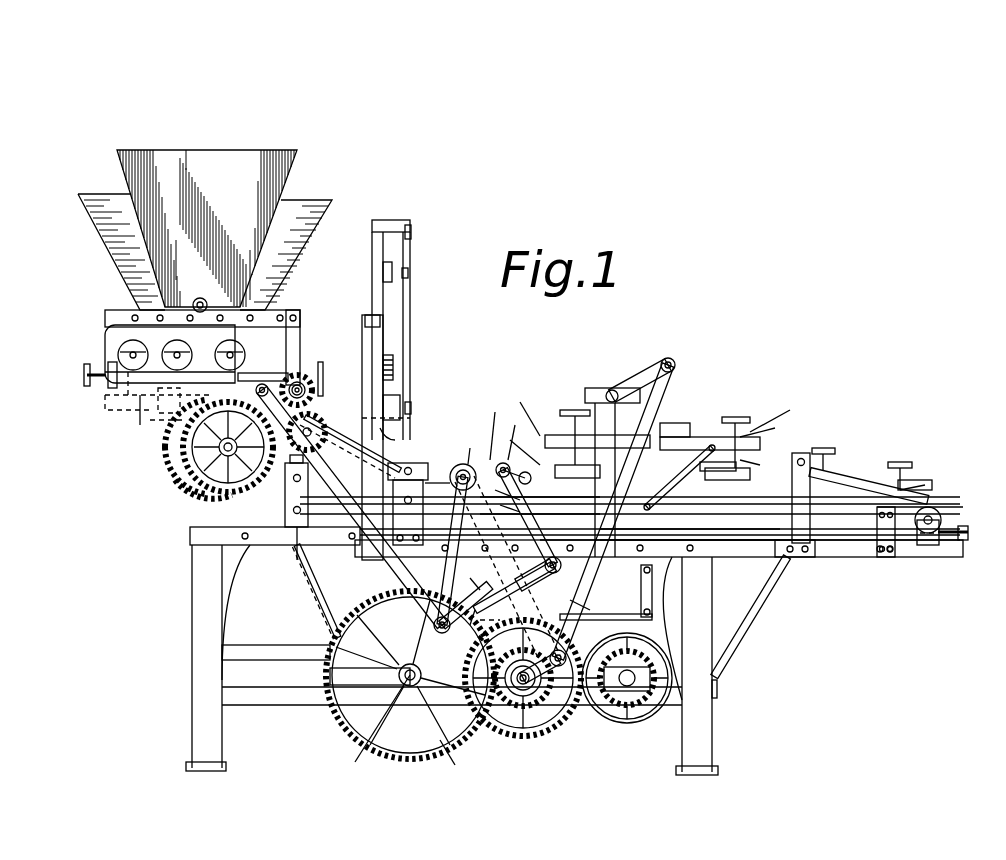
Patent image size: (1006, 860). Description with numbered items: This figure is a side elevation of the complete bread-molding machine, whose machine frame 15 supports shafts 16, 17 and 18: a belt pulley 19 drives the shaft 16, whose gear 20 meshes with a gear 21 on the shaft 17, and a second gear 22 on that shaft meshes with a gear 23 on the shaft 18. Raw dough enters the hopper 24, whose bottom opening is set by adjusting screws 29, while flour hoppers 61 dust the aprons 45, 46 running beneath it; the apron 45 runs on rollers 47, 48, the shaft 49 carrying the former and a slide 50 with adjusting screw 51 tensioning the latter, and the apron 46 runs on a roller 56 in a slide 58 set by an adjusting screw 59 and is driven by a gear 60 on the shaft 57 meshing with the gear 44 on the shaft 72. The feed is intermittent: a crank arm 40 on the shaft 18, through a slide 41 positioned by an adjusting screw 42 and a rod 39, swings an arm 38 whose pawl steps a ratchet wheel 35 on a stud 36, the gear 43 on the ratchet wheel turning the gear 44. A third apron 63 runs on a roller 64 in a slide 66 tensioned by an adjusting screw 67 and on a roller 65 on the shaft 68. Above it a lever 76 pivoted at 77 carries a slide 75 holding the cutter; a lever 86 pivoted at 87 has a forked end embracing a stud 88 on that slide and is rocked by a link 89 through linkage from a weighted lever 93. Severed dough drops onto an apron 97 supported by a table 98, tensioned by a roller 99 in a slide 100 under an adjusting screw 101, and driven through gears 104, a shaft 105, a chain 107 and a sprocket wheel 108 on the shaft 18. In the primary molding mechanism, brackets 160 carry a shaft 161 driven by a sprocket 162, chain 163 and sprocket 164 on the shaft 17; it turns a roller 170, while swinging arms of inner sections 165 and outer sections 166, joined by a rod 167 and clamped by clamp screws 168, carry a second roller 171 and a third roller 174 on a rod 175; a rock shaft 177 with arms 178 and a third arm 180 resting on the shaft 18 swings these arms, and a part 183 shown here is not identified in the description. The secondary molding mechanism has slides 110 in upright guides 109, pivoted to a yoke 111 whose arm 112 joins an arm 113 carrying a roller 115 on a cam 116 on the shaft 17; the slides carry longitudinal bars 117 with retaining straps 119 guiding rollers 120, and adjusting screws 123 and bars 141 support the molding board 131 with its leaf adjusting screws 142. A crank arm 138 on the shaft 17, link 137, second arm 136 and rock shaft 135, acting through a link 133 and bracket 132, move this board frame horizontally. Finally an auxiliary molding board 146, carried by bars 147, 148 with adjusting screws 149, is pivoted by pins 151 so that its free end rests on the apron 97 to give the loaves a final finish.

The hopper 24 is at (207, 216).
The flour hoppers 61 is at (105, 198).
The adjusting screws 29 is at (204, 300).
The apron 45 is at (140, 325).
The apron 46 is at (295, 345).
The roller 48 is at (110, 338).
The shaft 49 is at (172, 358).
The roller 47 is at (187, 359).
The roller 56 is at (245, 348).
The slide 58 is at (263, 367).
The adjusting screw 51 is at (84, 377).
The slide 50 is at (130, 372).
The roller 64 is at (138, 418).
The adjusting screw 67 is at (135, 412).
The arm 38 is at (165, 425).
The slide 66 is at (150, 430).
The gear 60 is at (310, 376).
The adjusting screw 59 is at (323, 380).
The shaft 57 is at (306, 393).
The gear 44 is at (310, 430).
The stud 36 is at (182, 447).
The ratchet wheel 35 is at (175, 468).
The gear 43 is at (195, 488).
The rod 39 is at (370, 560).
The shaft 72 is at (320, 424).
The gears 104 is at (286, 498).
The shaft 105 is at (295, 540).
The pivot 87 is at (412, 230).
The lever 86 is at (404, 318).
The link 89 is at (396, 276).
The slide 75 is at (396, 390).
The stud 88 is at (410, 408).
The pivot 77 is at (404, 418).
The lever 76 is at (396, 437).
The apron 63 is at (400, 442).
The roller 65 is at (420, 465).
The shaft 68 is at (423, 489).
The roller 170 is at (443, 468).
The table 98 is at (848, 512).
The rod or shaft 175 is at (520, 500).
The roller 174 is at (520, 515).
The upright guides 109 is at (660, 524).
The slides 110 is at (650, 541).
The machine frame 15 is at (722, 548).
The belt pulley 19 is at (755, 580).
The chain 107 is at (322, 605).
The lever 93 is at (272, 660).
The shaft 18 is at (412, 690).
The sprocket wheel 108 is at (377, 731).
The gear 23 is at (451, 767).
The gear 21 is at (535, 735).
The gear 22 is at (500, 710).
The sprocket 164 is at (520, 690).
The shaft 17 is at (528, 682).
The crank arm 138 is at (560, 668).
The gear 20 is at (633, 660).
The shaft 16 is at (630, 686).
The shaft 161 is at (464, 463).
The brackets 160 is at (446, 560).
The sprocket 162 is at (476, 436).
The inner sections 165 is at (496, 424).
The rod or shaft 167 is at (516, 434).
The bars 141 is at (515, 444).
The clamp screws 168 is at (512, 459).
The outer sections 166 is at (540, 474).
The chain 163 is at (533, 540).
The roller 171 is at (516, 491).
The pin 183 is at (517, 507).
The arms 178 is at (545, 567).
The rock shaft 177 is at (550, 575).
The arm 180 is at (514, 588).
The slide 41 is at (500, 600).
The crank arm 40 is at (507, 569).
The adjusting screw 42 is at (462, 590).
The roller 115 is at (582, 608).
The cam 116 is at (593, 612).
The arm 113 is at (495, 624).
The arm 136 is at (635, 378).
The link 137 is at (665, 380).
The rock shaft 135 is at (610, 390).
The link 133 is at (680, 415).
The bracket 132 is at (690, 425).
The adjusting screws 142 is at (652, 468).
The rollers 120 is at (572, 415).
The adjusting screws 123 is at (665, 411).
The retaining straps 119 is at (774, 424).
The longitudinal bars 117 is at (764, 463).
The molding board 131 is at (738, 478).
The yoke 111 is at (655, 580).
The arm 112 is at (655, 596).
The pins 151 is at (805, 458).
The bars 148 is at (865, 480).
The adjusting screws 149 is at (828, 460).
The bars 147 is at (927, 471).
The auxiliary molding board 146 is at (930, 480).
The apron 97 is at (938, 500).
The roller 99 is at (942, 515).
The slide 100 is at (930, 545).
The adjusting screw 101 is at (968, 530).